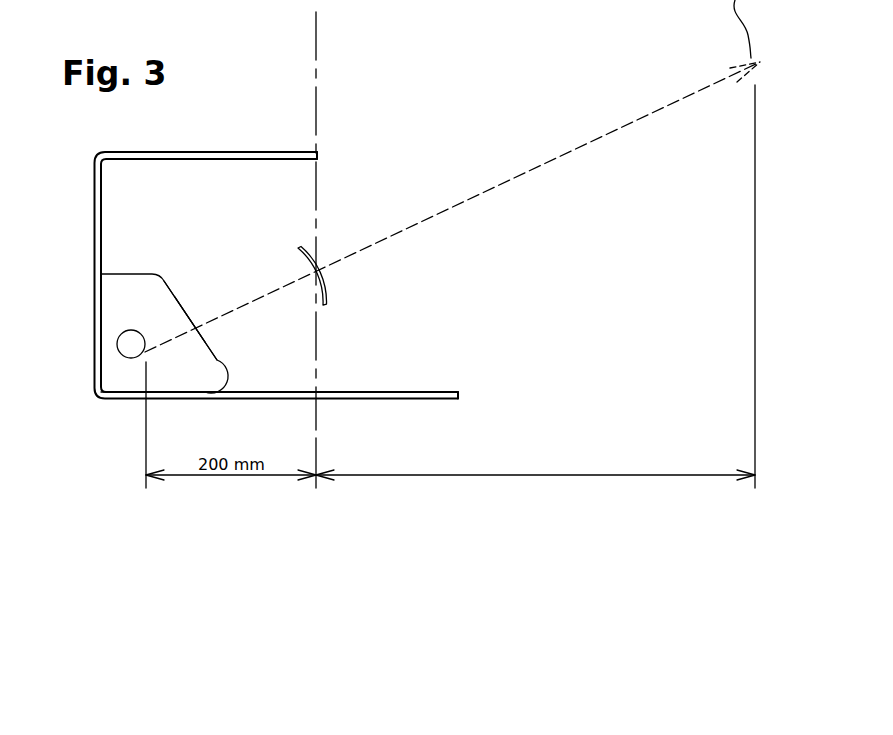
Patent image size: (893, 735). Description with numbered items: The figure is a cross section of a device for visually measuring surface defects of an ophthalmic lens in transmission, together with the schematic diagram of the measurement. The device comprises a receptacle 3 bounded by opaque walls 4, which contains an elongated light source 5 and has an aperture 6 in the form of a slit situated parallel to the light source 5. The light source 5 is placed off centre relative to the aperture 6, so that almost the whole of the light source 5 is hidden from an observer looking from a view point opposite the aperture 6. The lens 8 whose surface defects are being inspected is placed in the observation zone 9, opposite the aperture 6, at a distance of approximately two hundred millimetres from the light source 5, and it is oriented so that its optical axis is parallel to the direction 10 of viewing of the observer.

The receptacle 3 is at (165, 262).
The opaque walls 4 is at (177, 293).
The light source 5 is at (119, 352).
The aperture 6 is at (195, 331).
The lens 8 is at (325, 294).
The observation zone 9 is at (330, 245).
The direction of viewing 10 is at (563, 155).